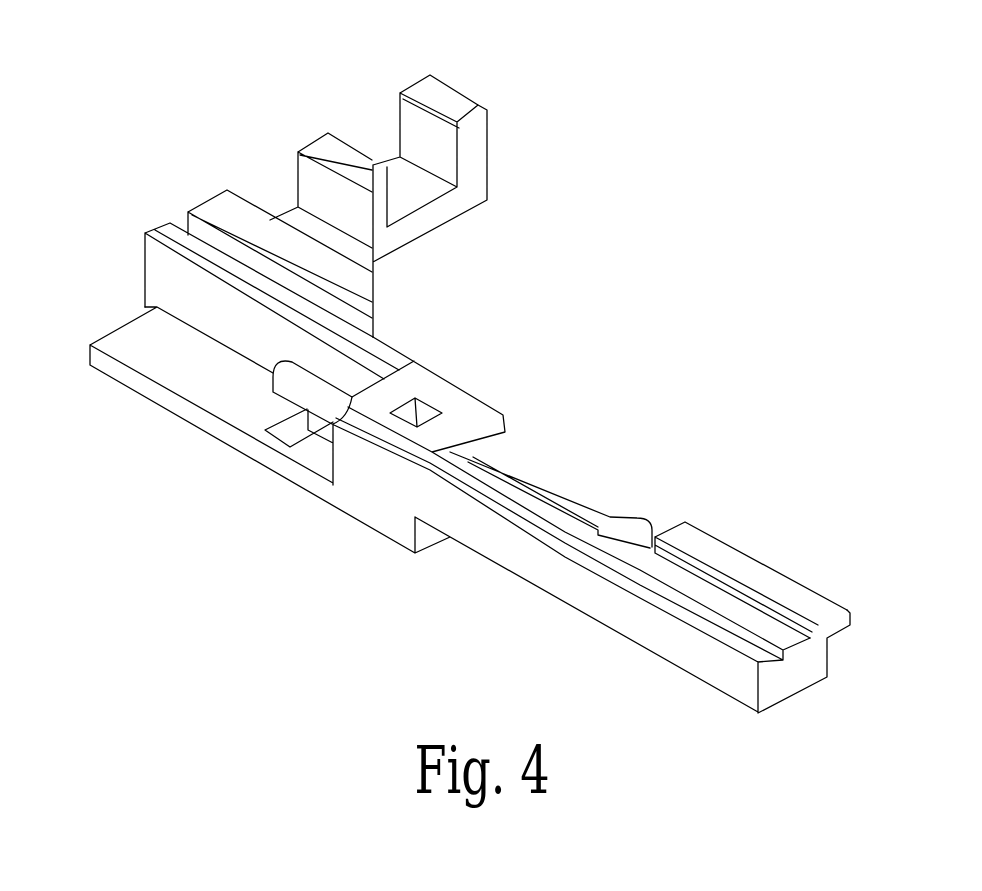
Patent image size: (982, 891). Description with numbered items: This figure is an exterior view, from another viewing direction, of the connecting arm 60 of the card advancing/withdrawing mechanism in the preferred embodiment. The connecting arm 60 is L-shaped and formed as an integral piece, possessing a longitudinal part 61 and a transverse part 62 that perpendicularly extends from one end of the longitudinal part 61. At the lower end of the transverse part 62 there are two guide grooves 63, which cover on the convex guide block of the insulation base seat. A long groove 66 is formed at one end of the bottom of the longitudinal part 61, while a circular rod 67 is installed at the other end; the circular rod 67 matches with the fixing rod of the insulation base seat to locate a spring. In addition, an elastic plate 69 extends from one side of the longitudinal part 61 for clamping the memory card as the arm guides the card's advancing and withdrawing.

The connecting arm 60 is at (699, 307).
The longitudinal part 61 is at (378, 505).
The transverse part 62 is at (435, 220).
The guide grooves 63 is at (381, 130).
The long groove 66 is at (717, 602).
The circular rod 67 is at (288, 393).
The elastic plate 69 is at (577, 504).